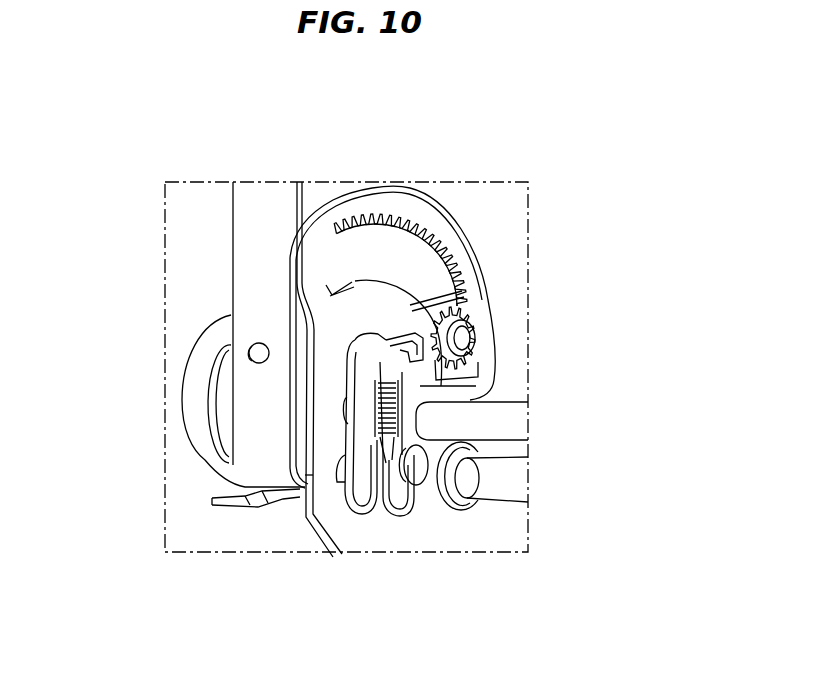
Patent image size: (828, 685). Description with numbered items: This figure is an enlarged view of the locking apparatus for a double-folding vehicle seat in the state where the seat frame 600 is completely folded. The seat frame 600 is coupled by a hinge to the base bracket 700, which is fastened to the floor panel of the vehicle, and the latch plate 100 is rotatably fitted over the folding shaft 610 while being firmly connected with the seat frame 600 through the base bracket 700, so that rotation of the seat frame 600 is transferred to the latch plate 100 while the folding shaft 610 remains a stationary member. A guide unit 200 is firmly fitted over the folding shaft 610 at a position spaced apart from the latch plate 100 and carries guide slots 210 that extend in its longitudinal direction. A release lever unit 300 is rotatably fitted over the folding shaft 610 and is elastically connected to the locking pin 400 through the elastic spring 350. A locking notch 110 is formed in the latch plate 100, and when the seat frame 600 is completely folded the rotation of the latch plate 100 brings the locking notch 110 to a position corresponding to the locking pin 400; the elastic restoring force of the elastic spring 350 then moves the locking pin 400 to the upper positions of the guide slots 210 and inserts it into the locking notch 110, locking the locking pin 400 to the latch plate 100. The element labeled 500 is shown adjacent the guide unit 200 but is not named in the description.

The latch plate 100 is at (432, 222).
The locking notch 110 is at (331, 497).
The guide unit 200 is at (441, 393).
The guide slots 210 is at (407, 497).
The release lever unit 300 is at (362, 338).
The elastic spring 350 is at (375, 414).
The locking pin 400 is at (417, 460).
The pinion gear 500 is at (468, 300).
The seat frame 600 is at (260, 235).
The folding shaft 610 is at (503, 418).
The base bracket 700 is at (352, 532).